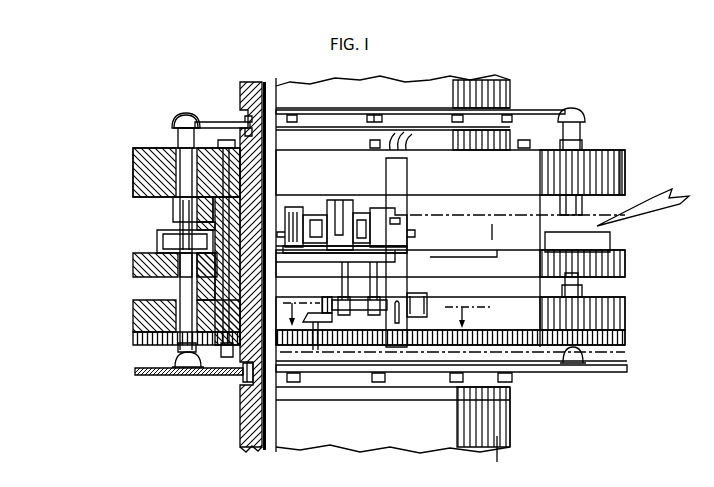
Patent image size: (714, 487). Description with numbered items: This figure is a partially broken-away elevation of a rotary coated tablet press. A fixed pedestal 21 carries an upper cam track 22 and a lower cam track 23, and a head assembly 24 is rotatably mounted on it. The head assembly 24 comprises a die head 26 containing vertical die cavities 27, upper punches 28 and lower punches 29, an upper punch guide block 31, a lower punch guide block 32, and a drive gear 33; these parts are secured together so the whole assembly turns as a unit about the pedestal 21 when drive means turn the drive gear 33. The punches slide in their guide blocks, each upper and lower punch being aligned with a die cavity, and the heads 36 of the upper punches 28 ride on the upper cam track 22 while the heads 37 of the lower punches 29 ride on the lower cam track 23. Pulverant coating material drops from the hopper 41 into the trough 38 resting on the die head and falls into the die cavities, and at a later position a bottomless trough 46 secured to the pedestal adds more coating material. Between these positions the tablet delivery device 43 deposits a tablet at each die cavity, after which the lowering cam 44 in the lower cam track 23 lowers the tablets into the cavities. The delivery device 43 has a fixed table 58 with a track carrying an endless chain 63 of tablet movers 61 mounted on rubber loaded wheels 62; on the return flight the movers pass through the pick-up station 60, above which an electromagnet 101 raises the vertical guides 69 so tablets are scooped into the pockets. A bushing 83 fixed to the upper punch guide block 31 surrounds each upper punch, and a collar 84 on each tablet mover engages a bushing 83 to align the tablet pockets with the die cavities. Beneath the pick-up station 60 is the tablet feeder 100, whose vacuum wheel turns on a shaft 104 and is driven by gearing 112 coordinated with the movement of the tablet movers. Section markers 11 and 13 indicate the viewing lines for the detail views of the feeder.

The section line 11 is at (512, 232).
The section line 13 is at (386, 306).
The pedestal 21 is at (254, 83).
The upper cam track 22 is at (232, 122).
The lower cam track 23 is at (170, 373).
The head assembly 24 is at (148, 150).
The die head 26 is at (133, 268).
The vertical die cavities 27 is at (180, 262).
The upper punches 28 is at (178, 142).
The lower punches 29 is at (176, 360).
The upper punch guide block 31 is at (133, 162).
The lower punch guide block 32 is at (133, 308).
The drive gear 33 is at (133, 338).
The heads of upper punches 36 is at (197, 113).
The heads of lower punches 37 is at (198, 372).
The trough 38 is at (600, 243).
The hopper 41 is at (644, 204).
The tablet delivery device 43 is at (298, 207).
The lowering cam 44 is at (330, 368).
The bottomless trough 46 is at (157, 235).
The table 58 is at (463, 258).
The pick-up station 60 is at (420, 236).
The tablet movers 61 is at (331, 210).
The wheels 62 is at (312, 215).
The endless chain 63 is at (361, 213).
The vertical guides 69 is at (402, 220).
The bushing 83 is at (178, 206).
The collar 84 is at (343, 213).
The tablet feeder 100 is at (428, 292).
The electromagnet 101 is at (407, 178).
The shaft 104 is at (352, 312).
The gearing 112 is at (326, 300).